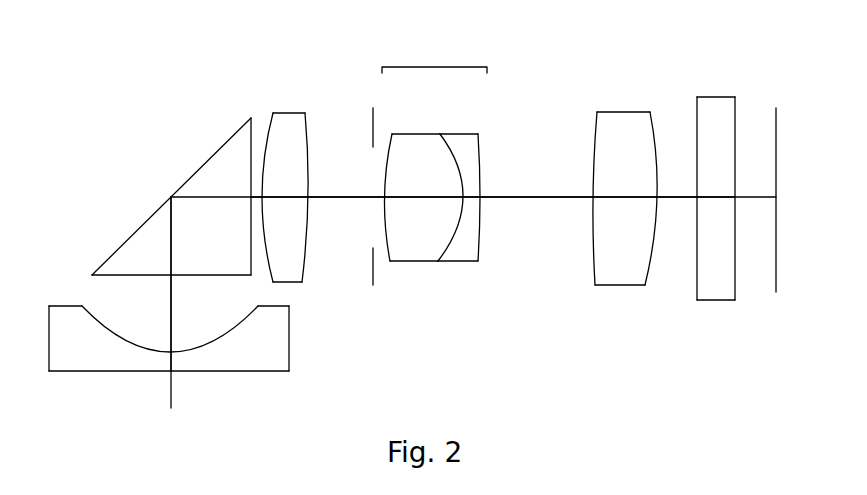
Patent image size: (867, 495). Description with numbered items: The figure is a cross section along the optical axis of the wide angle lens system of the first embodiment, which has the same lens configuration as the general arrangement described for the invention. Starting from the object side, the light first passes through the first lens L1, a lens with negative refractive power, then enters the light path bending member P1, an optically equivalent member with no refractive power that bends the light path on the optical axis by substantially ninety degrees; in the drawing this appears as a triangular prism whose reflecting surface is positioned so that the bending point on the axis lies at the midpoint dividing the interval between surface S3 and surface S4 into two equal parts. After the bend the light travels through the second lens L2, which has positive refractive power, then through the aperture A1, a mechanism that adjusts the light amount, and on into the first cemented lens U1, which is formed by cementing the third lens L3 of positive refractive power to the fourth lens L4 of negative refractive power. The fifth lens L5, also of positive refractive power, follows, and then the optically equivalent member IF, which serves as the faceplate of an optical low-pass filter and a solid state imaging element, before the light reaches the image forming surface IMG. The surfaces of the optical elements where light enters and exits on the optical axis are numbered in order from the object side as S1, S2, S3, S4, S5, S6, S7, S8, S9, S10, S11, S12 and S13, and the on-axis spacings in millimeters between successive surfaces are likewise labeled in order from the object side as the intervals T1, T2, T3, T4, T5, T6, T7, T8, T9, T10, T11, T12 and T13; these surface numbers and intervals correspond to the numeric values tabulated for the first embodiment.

The first lens L1 is at (195, 372).
The second lens L2 is at (273, 155).
The third lens L3 is at (412, 217).
The fourth lens L4 is at (470, 209).
The fifth lens L5 is at (609, 207).
The light path bending member P1 is at (172, 166).
The aperture A1 is at (372, 143).
The first cemented lens U1 is at (430, 180).
The optically equivalent member IF is at (716, 194).
The image forming surface IMG is at (776, 108).
The surface number S1 is at (237, 371).
The surface number S2 is at (128, 341).
The surface number S3 is at (137, 275).
The surface number S4 is at (252, 147).
The surface number S5 is at (269, 117).
The surface number S6 is at (307, 147).
The surface number S7 is at (386, 250).
The surface number S8 is at (455, 262).
The surface number S9 is at (483, 247).
The surface number S10 is at (594, 250).
The surface number S11 is at (646, 268).
The surface number S12 is at (695, 290).
The surface number S13 is at (737, 290).
The interval T1 is at (173, 350).
The interval T2 is at (173, 302).
The interval T3 is at (173, 245).
The interval T4 is at (258, 199).
The interval T5 is at (280, 199).
The interval T6 is at (325, 199).
The interval T7 is at (373, 199).
The interval T8 is at (418, 199).
The interval T9 is at (473, 199).
The interval T10 is at (523, 199).
The interval T11 is at (613, 199).
The interval T12 is at (675, 199).
The interval T13 is at (717, 199).